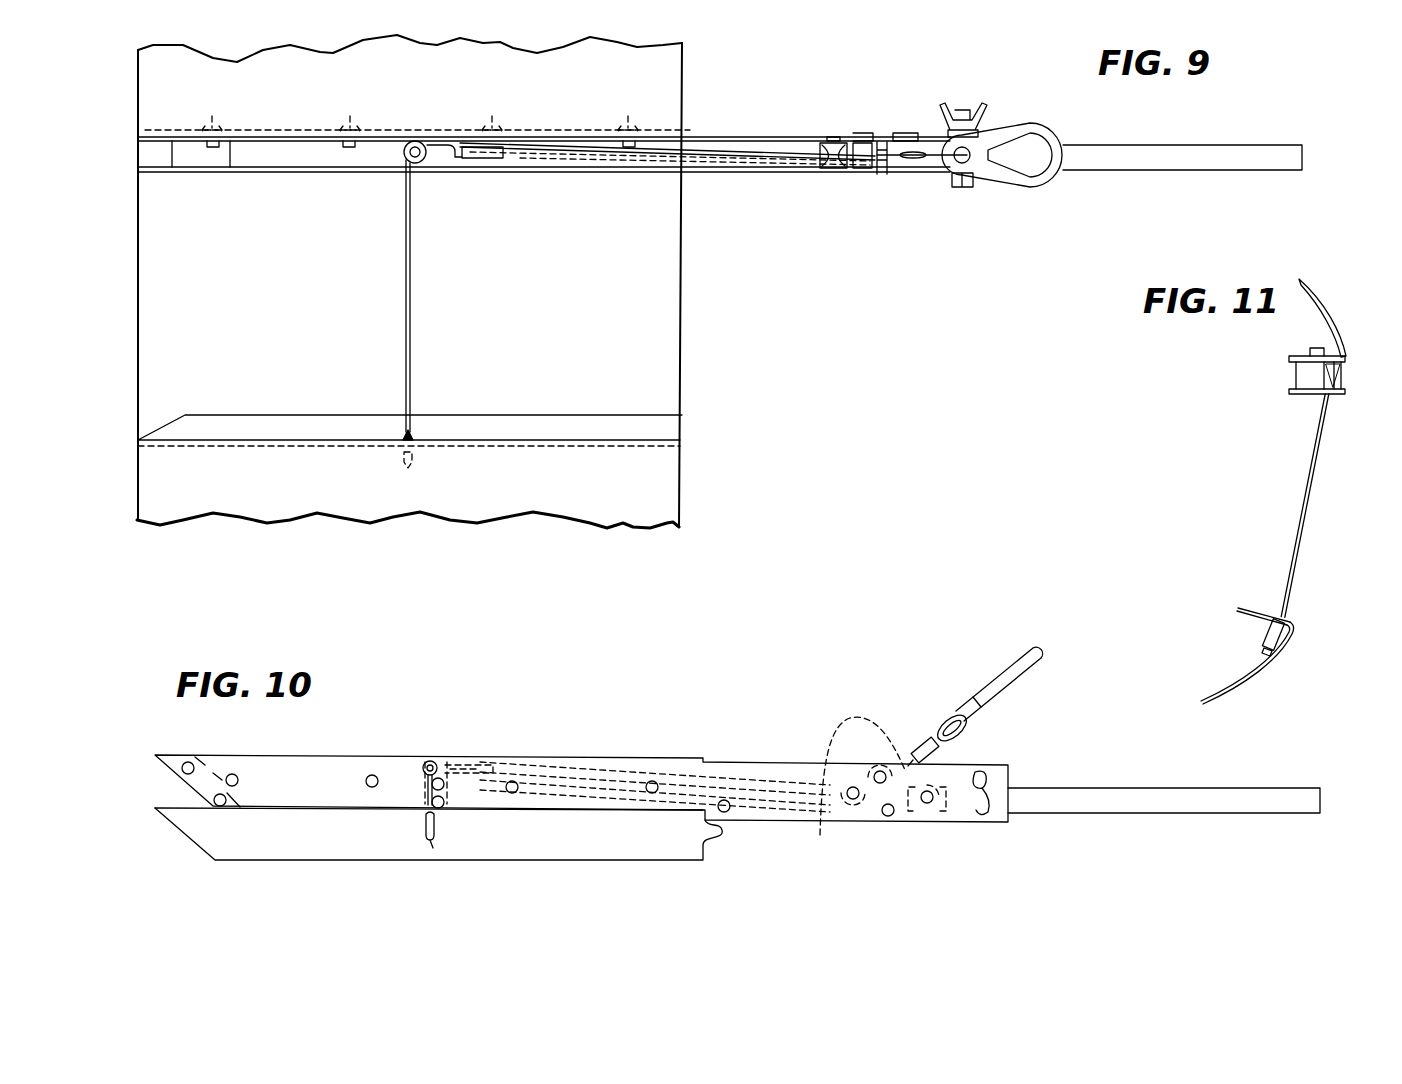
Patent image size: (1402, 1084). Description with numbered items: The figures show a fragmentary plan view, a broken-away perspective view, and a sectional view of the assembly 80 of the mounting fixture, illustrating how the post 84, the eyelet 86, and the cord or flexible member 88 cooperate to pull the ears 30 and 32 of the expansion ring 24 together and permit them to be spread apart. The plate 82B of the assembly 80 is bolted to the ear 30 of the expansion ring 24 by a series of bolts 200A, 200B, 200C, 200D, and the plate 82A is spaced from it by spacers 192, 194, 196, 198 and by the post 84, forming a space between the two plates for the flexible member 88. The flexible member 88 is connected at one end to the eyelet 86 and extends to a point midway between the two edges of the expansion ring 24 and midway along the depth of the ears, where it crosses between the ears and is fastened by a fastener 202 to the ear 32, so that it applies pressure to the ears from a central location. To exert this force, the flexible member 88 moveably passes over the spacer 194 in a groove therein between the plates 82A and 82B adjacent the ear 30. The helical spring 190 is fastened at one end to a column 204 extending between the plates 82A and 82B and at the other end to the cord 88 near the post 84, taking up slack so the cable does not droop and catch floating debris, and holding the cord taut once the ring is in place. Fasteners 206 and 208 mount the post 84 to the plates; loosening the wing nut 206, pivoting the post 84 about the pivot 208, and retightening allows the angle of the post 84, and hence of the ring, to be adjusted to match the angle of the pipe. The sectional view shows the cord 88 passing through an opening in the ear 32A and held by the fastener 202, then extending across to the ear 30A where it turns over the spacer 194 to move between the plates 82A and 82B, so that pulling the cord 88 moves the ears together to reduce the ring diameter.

In FIG. 9, the expansion ring 24 is at (670, 322).
In FIG. 11, the expansion ring 24 is at (1237, 687).
In FIG. 9, the ear 30 is at (263, 128).
In FIG. 11, the ear 30A is at (1330, 350).
In FIG. 9, the ear 32 is at (540, 428).
In FIG. 11, the ear 32A is at (1252, 606).
In FIG. 9, the assembly 80 is at (413, 120).
In FIG. 10, the assembly 80 is at (644, 717).
In FIG. 9, the plate 82A is at (330, 168).
In FIG. 10, the plate 82A is at (610, 850).
In FIG. 11, the plate 82A is at (1330, 396).
In FIG. 9, the plate 82B is at (763, 137).
In FIG. 10, the plate 82B is at (345, 755).
In FIG. 11, the plate 82B is at (1289, 362).
In FIG. 9, the post 84 is at (1185, 158).
In FIG. 10, the post 84 is at (1135, 788).
In FIG. 9, the eyelet 86 is at (1040, 132).
In FIG. 10, the eyelet 86 is at (1015, 675).
In FIG. 9, the flexible member 88 is at (405, 282).
In FIG. 10, the flexible member 88 is at (430, 848).
In FIG. 11, the flexible member 88 is at (1307, 492).
In FIG. 9, the helical spring 190 is at (745, 172).
In FIG. 10, the helical spring 190 is at (818, 832).
In FIG. 9, the spacer 192 is at (205, 158).
In FIG. 9, the spacer 194 is at (418, 164).
In FIG. 10, the spacer 194 is at (432, 760).
In FIG. 11, the spacer 194 is at (1302, 380).
In FIG. 9, the spacer 196 is at (833, 137).
In FIG. 9, the spacer 198 is at (876, 137).
In FIG. 9, the bolt 200A is at (214, 118).
In FIG. 9, the bolt 200B is at (352, 118).
In FIG. 9, the bolt 200C is at (494, 118).
In FIG. 9, the bolt 200D is at (630, 118).
In FIG. 9, the fastener 202 is at (404, 456).
In FIG. 11, the fastener 202 is at (1268, 632).
In FIG. 10, the column 204 is at (888, 817).
In FIG. 9, the wing nut 206 is at (963, 188).
In FIG. 10, the wing nut 206 is at (995, 818).
In FIG. 9, the pivot 208 is at (895, 137).
In FIG. 10, the pivot 208 is at (925, 812).